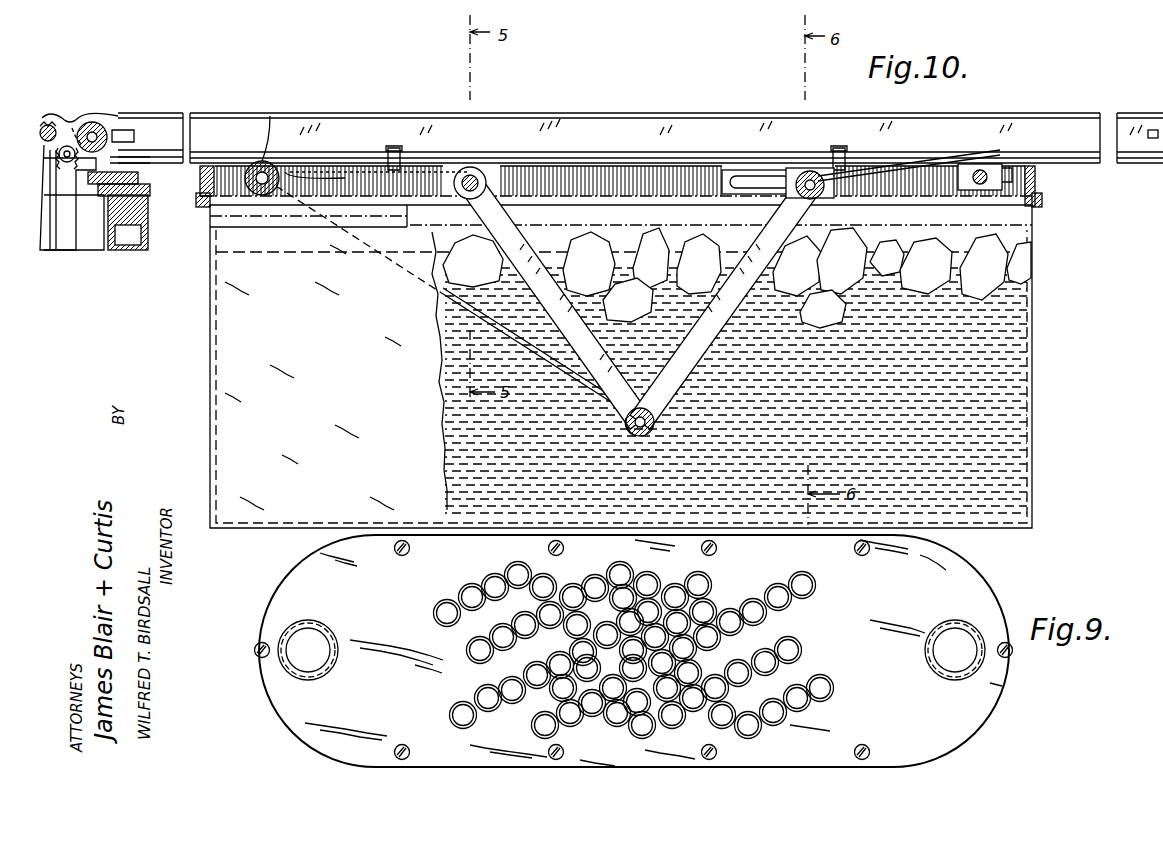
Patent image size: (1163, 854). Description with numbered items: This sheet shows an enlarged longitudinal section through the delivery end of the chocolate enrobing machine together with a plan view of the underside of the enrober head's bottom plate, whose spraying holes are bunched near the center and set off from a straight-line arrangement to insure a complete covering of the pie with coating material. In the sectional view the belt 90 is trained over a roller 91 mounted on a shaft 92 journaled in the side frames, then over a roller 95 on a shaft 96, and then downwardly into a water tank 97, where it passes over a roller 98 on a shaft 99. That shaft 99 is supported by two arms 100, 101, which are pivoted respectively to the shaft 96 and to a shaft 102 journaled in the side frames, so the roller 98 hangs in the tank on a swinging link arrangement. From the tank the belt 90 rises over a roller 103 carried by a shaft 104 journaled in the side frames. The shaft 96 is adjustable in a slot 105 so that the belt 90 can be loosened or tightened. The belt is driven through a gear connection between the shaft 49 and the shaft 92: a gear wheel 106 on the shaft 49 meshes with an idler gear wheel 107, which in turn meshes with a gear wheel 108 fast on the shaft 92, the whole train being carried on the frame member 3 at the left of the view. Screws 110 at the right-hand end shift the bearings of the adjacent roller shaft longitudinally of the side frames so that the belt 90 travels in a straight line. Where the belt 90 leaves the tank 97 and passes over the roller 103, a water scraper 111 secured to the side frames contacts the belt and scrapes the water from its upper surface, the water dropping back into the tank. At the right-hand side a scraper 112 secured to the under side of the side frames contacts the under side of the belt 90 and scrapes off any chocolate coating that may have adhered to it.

The frame member 3 is at (150, 190).
The shaft 49 is at (48, 125).
The belt 90 is at (605, 113).
The roller 91 is at (100, 138).
The shaft 92 is at (95, 132).
The roller 95 is at (812, 172).
The shaft 96 is at (796, 180).
The water tank 97 is at (1035, 462).
The roller 98 is at (644, 436).
The shaft 99 is at (630, 434).
The arm 100 is at (800, 212).
The arm 101 is at (512, 232).
The shaft 102 is at (478, 170).
The roller 103 is at (272, 125).
The shaft 104 is at (258, 195).
The slot 105 is at (740, 180).
The gear wheel 106 is at (62, 118).
The idler gear wheel 107 is at (72, 164).
The gear wheel 108 is at (78, 122).
The screws 110 is at (1152, 130).
The water scraper 111 is at (316, 166).
The scraper 112 is at (956, 178).